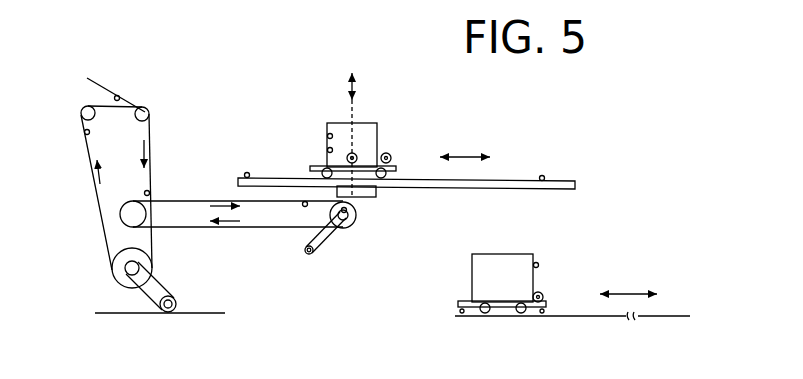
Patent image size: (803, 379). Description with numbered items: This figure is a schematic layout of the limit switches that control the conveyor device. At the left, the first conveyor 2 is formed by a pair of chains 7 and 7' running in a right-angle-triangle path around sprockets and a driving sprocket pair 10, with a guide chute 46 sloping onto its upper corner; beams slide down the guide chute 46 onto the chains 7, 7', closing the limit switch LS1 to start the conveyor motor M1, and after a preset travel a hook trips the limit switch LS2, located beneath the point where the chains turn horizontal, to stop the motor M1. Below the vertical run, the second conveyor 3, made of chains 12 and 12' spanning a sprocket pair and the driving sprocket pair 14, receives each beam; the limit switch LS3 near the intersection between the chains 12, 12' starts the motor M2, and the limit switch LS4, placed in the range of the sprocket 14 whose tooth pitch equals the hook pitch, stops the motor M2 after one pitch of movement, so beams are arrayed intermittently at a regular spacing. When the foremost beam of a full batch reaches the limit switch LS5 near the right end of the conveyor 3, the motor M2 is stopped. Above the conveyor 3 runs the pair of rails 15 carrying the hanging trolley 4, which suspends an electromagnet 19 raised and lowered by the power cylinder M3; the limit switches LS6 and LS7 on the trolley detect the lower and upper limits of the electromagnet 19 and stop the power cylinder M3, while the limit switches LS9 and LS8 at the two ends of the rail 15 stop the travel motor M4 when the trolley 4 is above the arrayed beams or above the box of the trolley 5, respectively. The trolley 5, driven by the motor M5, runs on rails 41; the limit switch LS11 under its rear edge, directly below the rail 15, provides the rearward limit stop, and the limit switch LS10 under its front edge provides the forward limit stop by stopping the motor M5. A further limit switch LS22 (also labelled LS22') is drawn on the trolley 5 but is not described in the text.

The first conveyor 2 is at (95, 208).
The second conveyor 3 is at (168, 233).
The hanging trolley 4 is at (384, 138).
The trolley 5 is at (468, 283).
The chain 7 is at (150, 116).
The chain 7' is at (150, 116).
The driving sprocket pair 10 is at (122, 278).
The chain 12 is at (231, 242).
The chain 12' is at (231, 242).
The driving sprocket pair 14 is at (346, 229).
The rails 15 is at (440, 190).
The electromagnet 19 is at (368, 194).
The rails 41 is at (651, 318).
The guide chute 46 is at (103, 87).
The driving motor M1 is at (168, 312).
The driving motor M2 is at (309, 255).
The power cylinder M3 is at (353, 152).
The motor M4 is at (392, 155).
The motor M5 is at (543, 294).
The limit switch LS1 is at (119, 96).
The limit switch LS2 is at (71, 106).
The limit switch LS3 is at (150, 192).
The limit switch LS4 is at (350, 220).
The limit switch LS5 is at (305, 207).
The limit switch LS6 is at (328, 149).
The limit switch LS7 is at (328, 134).
The limit switch LS8 is at (542, 175).
The limit switch LS9 is at (247, 172).
The limit switch LS10 is at (543, 314).
The limit switch LS11 is at (463, 314).
The limit switch LS22 is at (574, 250).
The limit switch LS22' is at (574, 250).